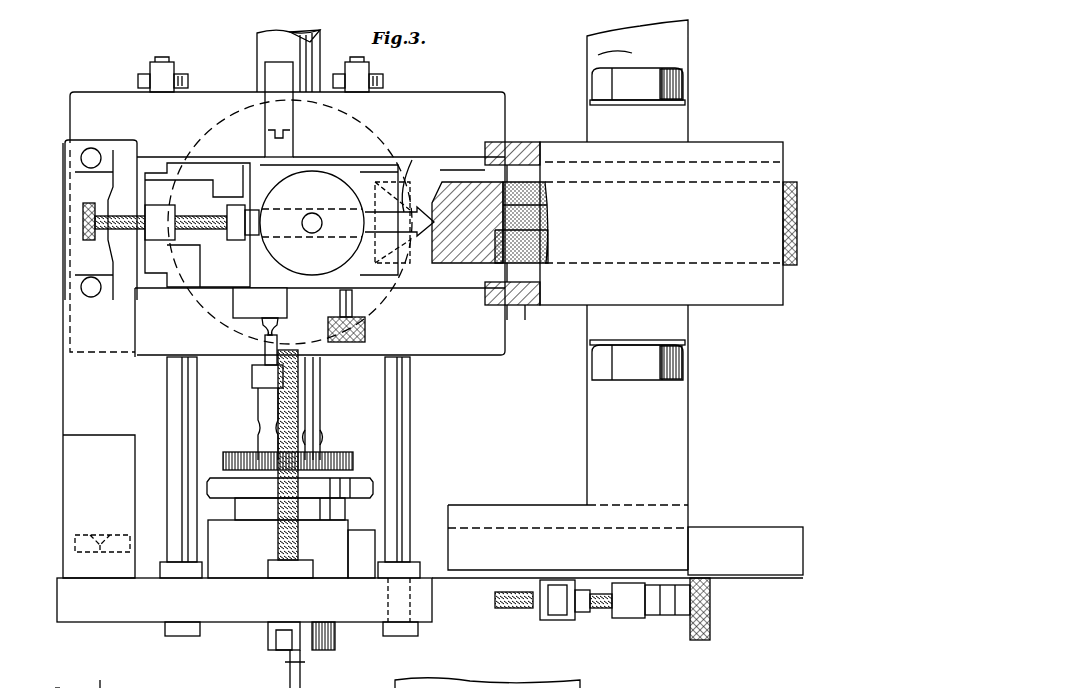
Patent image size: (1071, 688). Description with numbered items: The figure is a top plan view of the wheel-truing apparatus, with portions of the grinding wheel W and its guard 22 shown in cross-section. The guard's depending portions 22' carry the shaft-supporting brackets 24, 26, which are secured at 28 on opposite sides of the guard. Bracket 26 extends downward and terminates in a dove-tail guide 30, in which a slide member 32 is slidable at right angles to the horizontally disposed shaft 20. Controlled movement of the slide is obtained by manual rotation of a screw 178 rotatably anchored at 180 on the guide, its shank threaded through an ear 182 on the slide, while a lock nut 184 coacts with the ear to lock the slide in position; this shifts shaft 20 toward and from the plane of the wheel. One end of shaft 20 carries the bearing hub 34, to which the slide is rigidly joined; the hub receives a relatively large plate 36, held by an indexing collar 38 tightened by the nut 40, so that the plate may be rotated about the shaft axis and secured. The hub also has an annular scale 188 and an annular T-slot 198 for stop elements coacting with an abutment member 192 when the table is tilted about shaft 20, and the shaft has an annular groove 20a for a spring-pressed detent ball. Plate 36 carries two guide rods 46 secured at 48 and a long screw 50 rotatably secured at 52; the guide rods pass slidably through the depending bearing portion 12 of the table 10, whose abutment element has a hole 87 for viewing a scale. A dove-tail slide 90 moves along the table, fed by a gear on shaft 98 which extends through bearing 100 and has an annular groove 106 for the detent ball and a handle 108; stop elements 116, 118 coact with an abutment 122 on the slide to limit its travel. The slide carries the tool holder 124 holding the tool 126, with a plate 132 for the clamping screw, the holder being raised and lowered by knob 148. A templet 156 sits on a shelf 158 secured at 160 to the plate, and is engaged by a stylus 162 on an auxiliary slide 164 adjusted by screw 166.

The table 10 is at (98, 105).
The depending bearing portion 12 is at (67, 680).
The horizontally disposed shaft 20 is at (262, 42).
The annular groove 20a is at (258, 428).
The grinding wheel guard 22 is at (668, 223).
The depending portions of the grinding wheel guard 22' is at (495, 229).
The shaft-supporting bracket 24 is at (615, 100).
The shaft-supporting bracket 26 is at (676, 392).
The securement 28 is at (670, 87).
The dove-tail guide 30 is at (515, 512).
The slide member 32 is at (728, 535).
The bearing hub 34 is at (245, 550).
The plate 36 is at (140, 606).
The indexing collar 38 is at (345, 630).
The nut 40 is at (328, 655).
The guide rods 46 is at (180, 386).
The securement of guide rods 48 is at (168, 630).
The screw 50 is at (318, 452).
The rotatable securement of screw 52 is at (278, 632).
The hole 87 is at (482, 687).
The dove-tail slide 90 is at (333, 170).
The shaft 98 is at (250, 385).
The bearing 100 is at (245, 305).
The annular groove 106 is at (262, 330).
The handle 108 is at (302, 400).
The stop element 116 is at (352, 78).
The stop element 118 is at (158, 78).
The abutment 122 is at (280, 78).
The tool holder 124 is at (348, 178).
The tool 126 is at (408, 200).
The plate 132 is at (258, 175).
The knob 148 is at (368, 328).
The templet 156 is at (97, 192).
The shelf 158 is at (72, 392).
The securement of shelf 160 is at (78, 545).
The stylus 162 is at (135, 235).
The auxiliary slide 164 is at (180, 245).
The screw 166 is at (83, 222).
The screw 178 is at (605, 615).
The anchorage of screw 180 is at (640, 620).
The ear 182 is at (560, 612).
The lock nut 184 is at (535, 612).
The annular scale 188 is at (357, 460).
The abutment member 192 is at (117, 679).
The annular T-slot 198 is at (355, 510).
The grinding wheel W is at (458, 195).